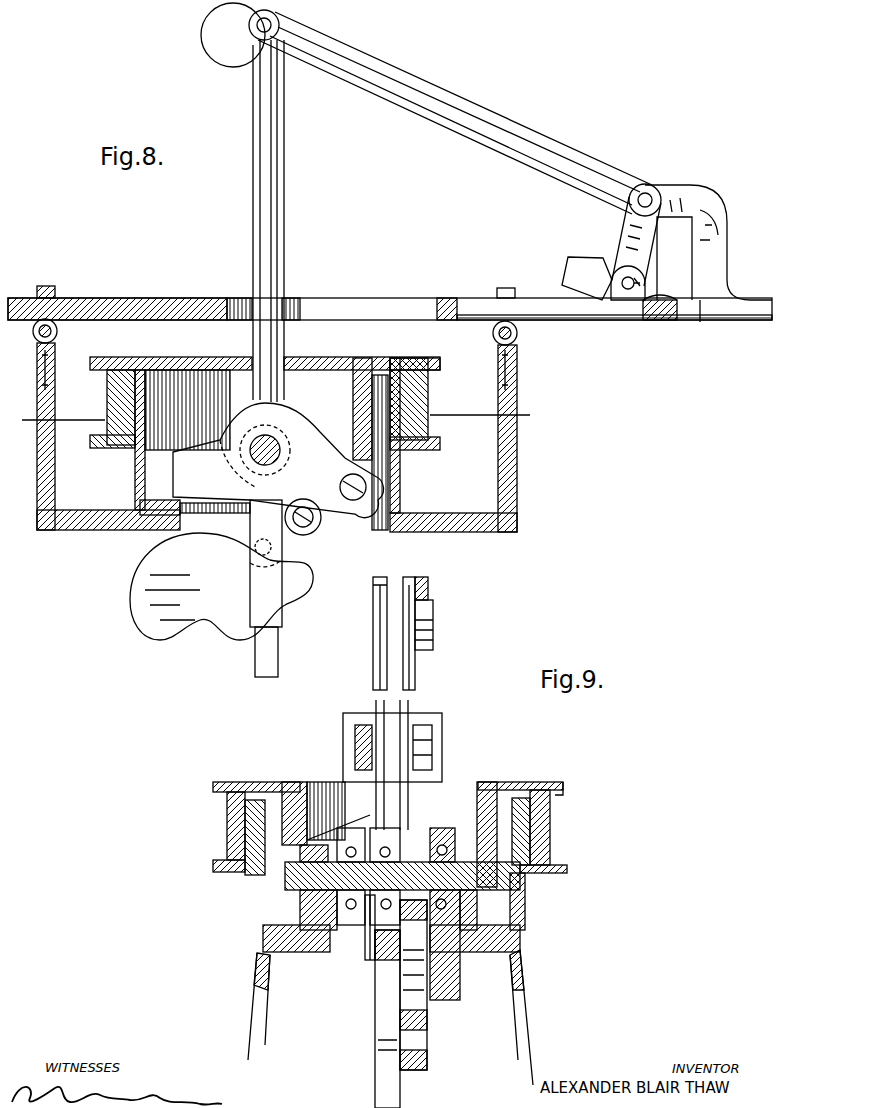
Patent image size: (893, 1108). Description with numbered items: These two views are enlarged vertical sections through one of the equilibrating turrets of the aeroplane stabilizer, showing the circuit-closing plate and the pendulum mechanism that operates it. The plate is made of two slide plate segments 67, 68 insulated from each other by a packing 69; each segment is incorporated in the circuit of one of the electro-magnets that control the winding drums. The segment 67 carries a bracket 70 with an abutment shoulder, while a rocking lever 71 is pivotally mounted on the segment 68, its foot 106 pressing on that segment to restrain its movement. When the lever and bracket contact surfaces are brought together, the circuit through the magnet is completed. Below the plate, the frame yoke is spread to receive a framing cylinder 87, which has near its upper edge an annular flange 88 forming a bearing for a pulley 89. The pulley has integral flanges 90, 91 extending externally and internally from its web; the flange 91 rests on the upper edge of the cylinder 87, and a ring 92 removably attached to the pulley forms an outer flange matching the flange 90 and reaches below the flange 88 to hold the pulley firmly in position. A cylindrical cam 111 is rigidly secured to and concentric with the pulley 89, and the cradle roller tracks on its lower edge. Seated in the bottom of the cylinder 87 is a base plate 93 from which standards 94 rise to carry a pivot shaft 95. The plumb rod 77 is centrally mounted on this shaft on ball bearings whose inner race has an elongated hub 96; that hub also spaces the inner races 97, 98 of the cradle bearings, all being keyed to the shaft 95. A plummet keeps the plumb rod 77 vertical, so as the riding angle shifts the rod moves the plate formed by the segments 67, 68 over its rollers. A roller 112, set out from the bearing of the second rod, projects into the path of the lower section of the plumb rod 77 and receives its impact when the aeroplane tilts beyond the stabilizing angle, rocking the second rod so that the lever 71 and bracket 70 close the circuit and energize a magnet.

In FIG. 8, the slide plate segment 67 is at (715, 318).
In FIG. 8, the slide plate segment 68 is at (556, 320).
In FIG. 8, the packing 69 is at (653, 318).
In FIG. 8, the bracket 70 is at (720, 243).
In FIG. 8, the rocking lever 71 is at (648, 240).
In FIG. 8, the foot 106 is at (570, 262).
In FIG. 8, the cylindrical cam 111 is at (332, 372).
In FIG. 8, the framing cylinder 87 is at (130, 487).
In FIG. 9, the framing cylinder 87 is at (525, 898).
In FIG. 8, the annular flange 88 is at (400, 412).
In FIG. 9, the annular flange 88 is at (538, 836).
In FIG. 8, the pulley 89 is at (430, 388).
In FIG. 9, the pulley 89 is at (553, 810).
In FIG. 8, the ring 92 is at (430, 450).
In FIG. 9, the ring 92 is at (563, 875).
In FIG. 8, the roller 112 is at (318, 535).
In FIG. 9, the roller 112 is at (382, 962).
In FIG. 8, the plumb rod 77 is at (373, 648).
In FIG. 9, the plumb rod 77 is at (370, 925).
In FIG. 9, the flange 90 is at (558, 782).
In FIG. 9, the flange 91 is at (505, 782).
In FIG. 9, the base plate 93 is at (496, 926).
In FIG. 9, the standards 94 is at (302, 903).
In FIG. 9, the pivot shaft 95 is at (302, 873).
In FIG. 9, the elongated hub 96 is at (420, 842).
In FIG. 9, the inner race 97 is at (448, 855).
In FIG. 9, the inner race 98 is at (302, 853).